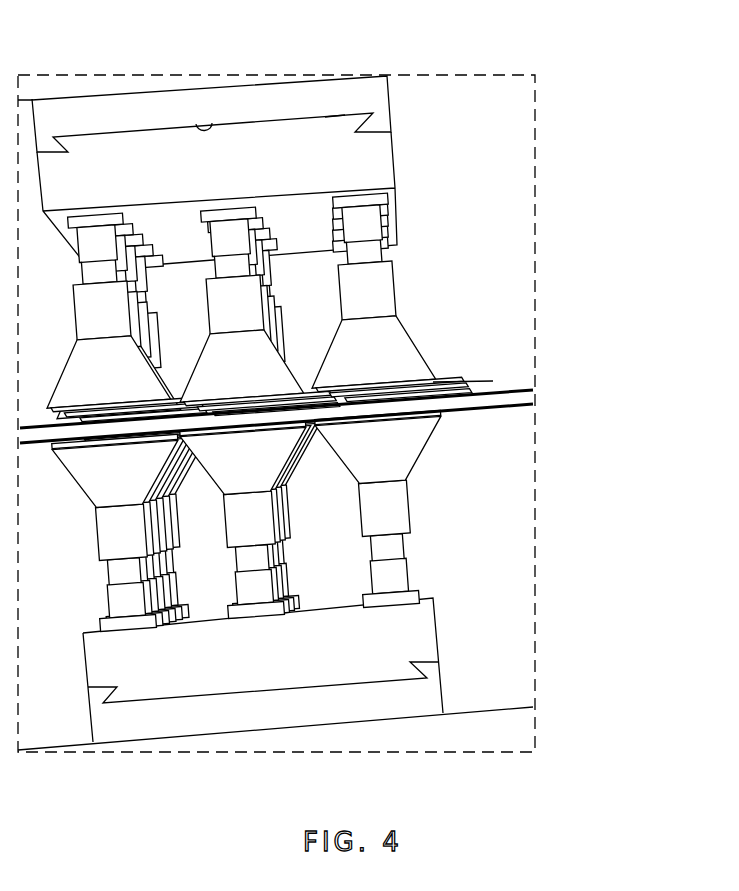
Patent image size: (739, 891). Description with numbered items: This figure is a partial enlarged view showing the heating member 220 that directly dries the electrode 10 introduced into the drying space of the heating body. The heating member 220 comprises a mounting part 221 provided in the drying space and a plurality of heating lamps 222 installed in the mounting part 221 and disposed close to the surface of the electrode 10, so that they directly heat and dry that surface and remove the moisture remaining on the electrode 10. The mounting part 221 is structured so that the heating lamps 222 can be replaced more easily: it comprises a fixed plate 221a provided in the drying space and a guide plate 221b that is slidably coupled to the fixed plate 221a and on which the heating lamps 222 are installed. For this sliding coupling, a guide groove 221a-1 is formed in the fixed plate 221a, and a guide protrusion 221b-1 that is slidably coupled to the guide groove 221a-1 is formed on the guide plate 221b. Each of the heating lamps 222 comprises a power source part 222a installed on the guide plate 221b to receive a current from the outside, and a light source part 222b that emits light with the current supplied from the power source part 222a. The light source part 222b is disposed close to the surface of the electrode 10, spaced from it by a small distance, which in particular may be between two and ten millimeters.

The heating member 220 is at (374, 326).
The mounting part 221 is at (345, 145).
The fixed plate 221a is at (378, 97).
The guide plate 221b is at (378, 155).
The guide groove 221a-1 is at (213, 121).
The guide protrusion 221b-1 is at (335, 123).
The heating lamp 222 is at (357, 392).
The power source part 222a is at (378, 293).
The light source part 222b is at (400, 353).
The electrode 10 is at (520, 390).